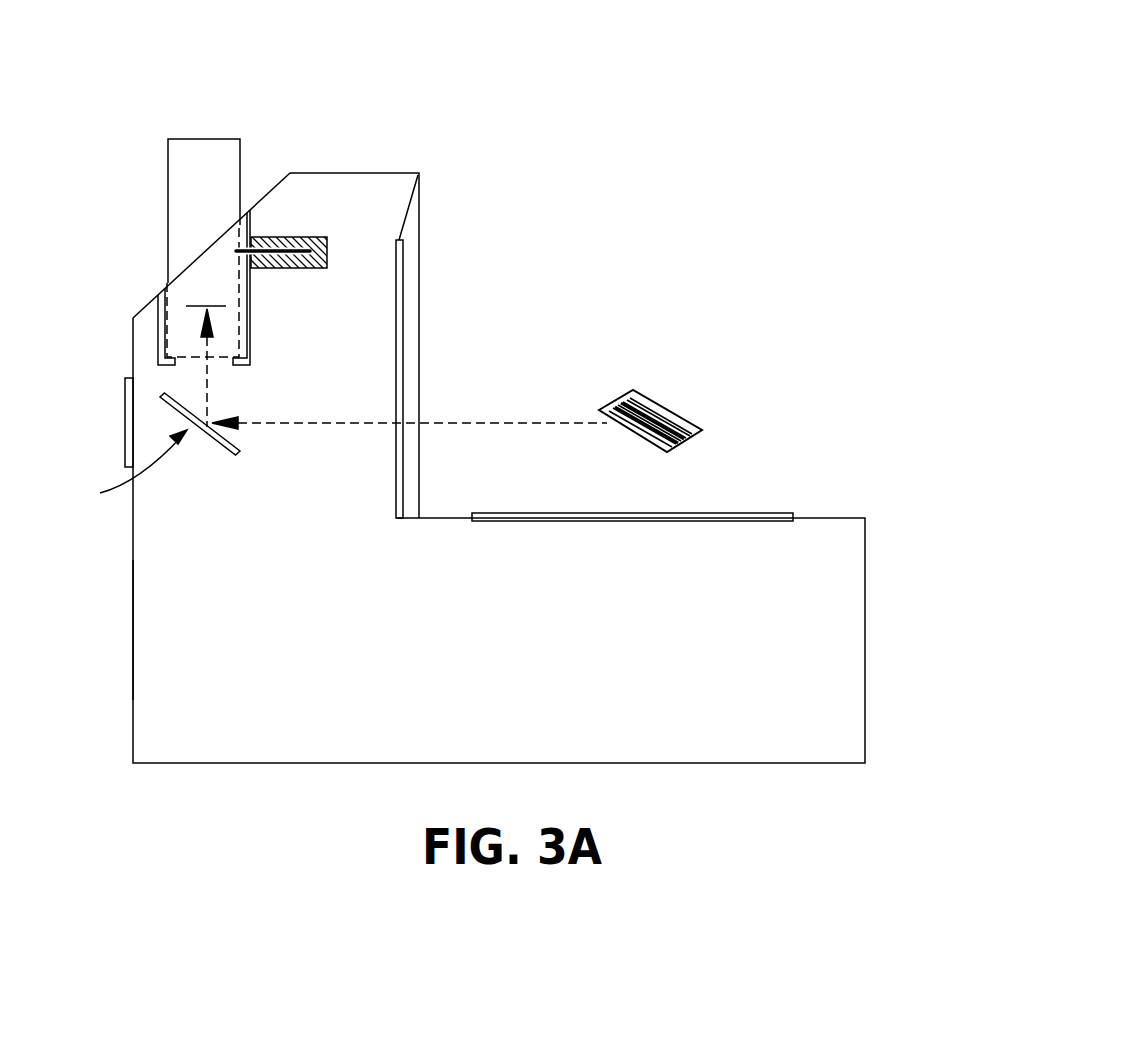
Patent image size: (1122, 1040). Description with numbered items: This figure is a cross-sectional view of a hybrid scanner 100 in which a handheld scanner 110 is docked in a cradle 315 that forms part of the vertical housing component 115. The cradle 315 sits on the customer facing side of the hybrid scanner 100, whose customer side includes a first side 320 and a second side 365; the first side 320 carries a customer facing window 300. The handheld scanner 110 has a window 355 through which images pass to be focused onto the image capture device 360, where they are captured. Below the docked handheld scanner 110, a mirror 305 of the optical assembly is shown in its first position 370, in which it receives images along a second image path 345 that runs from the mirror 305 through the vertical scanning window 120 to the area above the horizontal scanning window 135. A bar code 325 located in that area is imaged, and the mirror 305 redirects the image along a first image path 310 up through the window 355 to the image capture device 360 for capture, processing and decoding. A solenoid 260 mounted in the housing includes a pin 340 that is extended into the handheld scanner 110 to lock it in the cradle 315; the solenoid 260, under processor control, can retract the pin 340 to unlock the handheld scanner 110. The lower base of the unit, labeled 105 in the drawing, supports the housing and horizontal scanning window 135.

The hybrid scanner 100 is at (732, 77).
The base housing 105 is at (262, 680).
The handheld scanner 110 is at (193, 138).
The vertical housing component 115 is at (398, 173).
The vertical scanning window 120 is at (402, 290).
The horizontal scanning window 135 is at (765, 513).
The solenoid 260 is at (273, 236).
The customer facing window 300 is at (125, 425).
The mirror 305 is at (215, 447).
The first image path 310 is at (200, 388).
The cradle 315 is at (240, 277).
The first side 320 is at (133, 633).
The bar code 325 is at (676, 412).
The pin 340 is at (309, 236).
The second image path 345 is at (357, 425).
The window 355 is at (222, 360).
The image capture device 360 is at (218, 307).
The second side 365 is at (273, 185).
The first position 370 is at (117, 470).